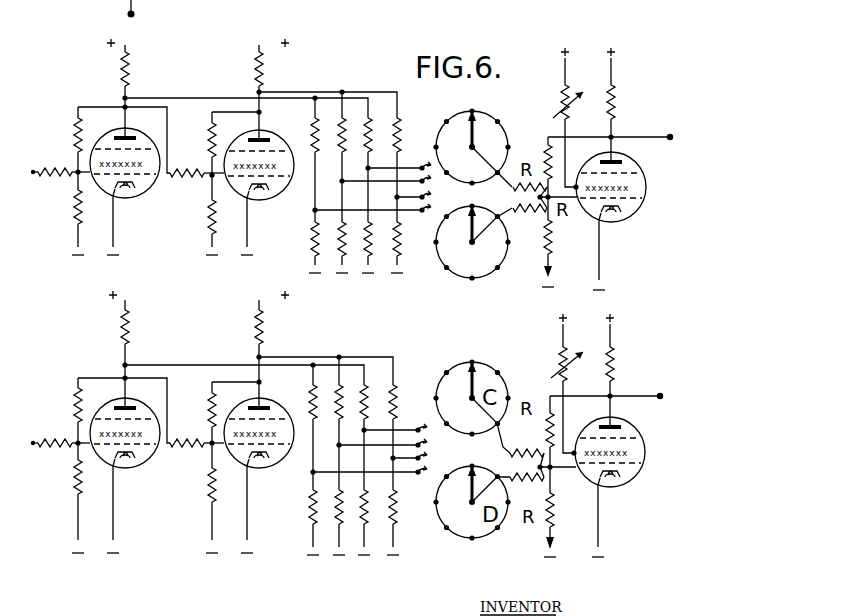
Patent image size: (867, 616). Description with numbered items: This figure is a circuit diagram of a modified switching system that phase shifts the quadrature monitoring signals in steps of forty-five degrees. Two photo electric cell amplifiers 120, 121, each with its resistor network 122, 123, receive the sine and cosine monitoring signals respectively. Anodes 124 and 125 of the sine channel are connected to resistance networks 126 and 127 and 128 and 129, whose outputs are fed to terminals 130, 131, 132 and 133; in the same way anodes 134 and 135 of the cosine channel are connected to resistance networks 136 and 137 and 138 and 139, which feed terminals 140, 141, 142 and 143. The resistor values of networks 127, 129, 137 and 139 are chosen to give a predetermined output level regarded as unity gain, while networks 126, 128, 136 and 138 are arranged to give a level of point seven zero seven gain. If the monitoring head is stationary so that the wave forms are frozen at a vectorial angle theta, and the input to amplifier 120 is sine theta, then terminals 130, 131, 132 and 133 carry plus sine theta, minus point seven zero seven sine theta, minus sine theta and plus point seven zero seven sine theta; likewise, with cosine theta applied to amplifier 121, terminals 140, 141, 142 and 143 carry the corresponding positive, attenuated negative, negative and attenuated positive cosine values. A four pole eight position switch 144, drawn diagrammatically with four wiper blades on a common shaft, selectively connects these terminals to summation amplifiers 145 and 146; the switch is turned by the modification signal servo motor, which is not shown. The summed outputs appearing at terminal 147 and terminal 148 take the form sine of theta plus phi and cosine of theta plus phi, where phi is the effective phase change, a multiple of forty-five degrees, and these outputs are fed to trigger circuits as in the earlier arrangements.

The photo electric cell amplifier 120 is at (133, 128).
The photo electric cell amplifier 121 is at (133, 398).
The resistor network 122 is at (77, 174).
The resistor network 123 is at (77, 446).
The anode 124 is at (122, 130).
The anode 125 is at (268, 139).
The resistance network 126 is at (313, 154).
The resistance network 127 is at (372, 118).
The resistance network 128 is at (332, 118).
The resistance network 129 is at (401, 132).
The terminal 130 is at (395, 197).
The terminal 131 is at (447, 170).
The terminal 132 is at (436, 148).
The terminal 133 is at (450, 119).
The anode 134 is at (122, 400).
The anode 135 is at (268, 408).
The resistance network 136 is at (311, 422).
The resistance network 137 is at (368, 385).
The resistance network 138 is at (333, 385).
The resistance network 139 is at (396, 385).
The terminal 140 is at (509, 243).
The terminal 141 is at (452, 284).
The terminal 142 is at (446, 266).
The terminal 143 is at (499, 219).
The four pole eight position switch 144 is at (553, 114).
The summation amplifier 145 is at (646, 184).
The summation amplifier 146 is at (644, 446).
The terminal 147 is at (674, 128).
The terminal 148 is at (668, 390).